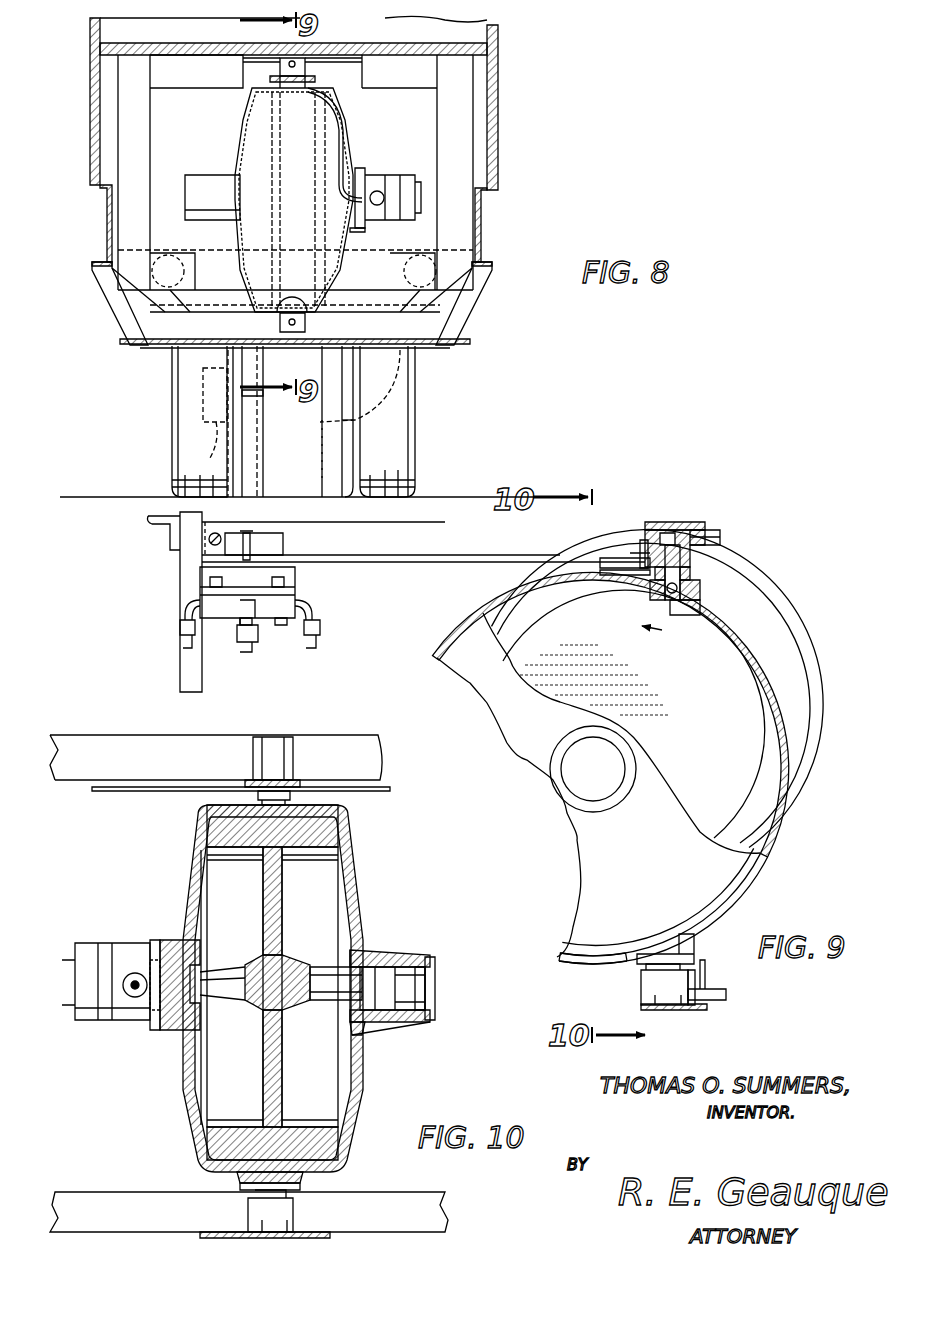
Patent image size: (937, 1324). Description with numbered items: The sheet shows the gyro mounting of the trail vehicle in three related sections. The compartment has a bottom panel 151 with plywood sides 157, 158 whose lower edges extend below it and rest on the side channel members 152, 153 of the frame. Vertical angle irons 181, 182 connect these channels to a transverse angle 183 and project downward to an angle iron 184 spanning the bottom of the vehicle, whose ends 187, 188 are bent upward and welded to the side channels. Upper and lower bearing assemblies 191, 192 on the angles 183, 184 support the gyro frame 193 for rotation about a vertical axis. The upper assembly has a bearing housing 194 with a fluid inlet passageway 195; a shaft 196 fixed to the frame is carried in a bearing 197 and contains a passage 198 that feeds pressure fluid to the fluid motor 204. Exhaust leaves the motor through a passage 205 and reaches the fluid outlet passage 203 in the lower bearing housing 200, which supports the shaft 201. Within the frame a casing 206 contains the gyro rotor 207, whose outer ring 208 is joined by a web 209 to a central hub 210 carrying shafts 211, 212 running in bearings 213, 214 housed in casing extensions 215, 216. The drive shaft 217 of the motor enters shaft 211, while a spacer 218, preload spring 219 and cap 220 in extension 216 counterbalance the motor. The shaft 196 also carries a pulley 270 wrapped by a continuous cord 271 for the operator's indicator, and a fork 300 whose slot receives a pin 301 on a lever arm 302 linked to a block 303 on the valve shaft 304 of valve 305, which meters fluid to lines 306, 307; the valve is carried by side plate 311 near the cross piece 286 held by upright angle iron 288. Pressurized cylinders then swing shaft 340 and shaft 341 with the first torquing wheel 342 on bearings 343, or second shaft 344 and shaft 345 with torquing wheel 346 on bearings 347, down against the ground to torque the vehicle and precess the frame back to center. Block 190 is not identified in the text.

In FIG. 8, the bottom panel 151 is at (412, 48).
In FIG. 8, the side channel member 152 is at (107, 230).
In FIG. 8, the side channel member 153 is at (480, 243).
In FIG. 8, the side 157 is at (100, 95).
In FIG. 8, the side 158 is at (492, 96).
In FIG. 8, the vertical angle iron 181 is at (140, 130).
In FIG. 8, the vertical angle iron 182 is at (458, 160).
In FIG. 9, the angle 183 is at (705, 524).
In FIG. 10, the angle 183 is at (358, 757).
In FIG. 8, the angle iron 184 is at (405, 332).
In FIG. 9, the angle iron 184 is at (700, 1012).
In FIG. 10, the angle iron 184 is at (398, 1200).
In FIG. 8, the end of angle iron 187 is at (100, 263).
In FIG. 8, the end of angle iron 188 is at (480, 270).
In FIG. 8, the support block 190 is at (398, 85).
In FIG. 9, the bearing assembly 191 is at (646, 524).
In FIG. 10, the bearing assembly 191 is at (275, 745).
In FIG. 9, the bearing assembly 192 is at (640, 988).
In FIG. 10, the bearing assembly 192 is at (296, 1210).
In FIG. 8, the gyro frame 193 is at (245, 135).
In FIG. 9, the gyro frame 193 is at (782, 698).
In FIG. 10, the gyro frame 193 is at (366, 905).
In FIG. 9, the bearing housing 194 is at (664, 522).
In FIG. 8, the fluid inlet passageway 195 is at (300, 45).
In FIG. 9, the fluid inlet passageway 195 is at (720, 535).
In FIG. 9, the shaft 196 is at (702, 596).
In FIG. 9, the bearing 197 is at (692, 570).
In FIG. 8, the passage 198 is at (346, 142).
In FIG. 9, the passage 198 is at (655, 604).
In FIG. 10, the passage 198 is at (186, 828).
In FIG. 9, the bearing housing 200 is at (676, 1010).
In FIG. 9, the shaft 201 is at (697, 960).
In FIG. 8, the fluid outlet passage 203 is at (292, 335).
In FIG. 9, the fluid outlet passage 203 is at (708, 992).
In FIG. 8, the fluid motor 204 is at (400, 182).
In FIG. 10, the fluid motor 204 is at (102, 1015).
In FIG. 8, the passage 205 is at (350, 232).
In FIG. 10, the passage 205 is at (135, 973).
In FIG. 10, the casing 206 is at (188, 905).
In FIG. 10, the gyro rotor 207 is at (223, 893).
In FIG. 10, the outer ring 208 is at (296, 840).
In FIG. 10, the web 209 is at (282, 922).
In FIG. 10, the central hub 210 is at (292, 972).
In FIG. 10, the shaft 211 is at (222, 983).
In FIG. 10, the shaft 212 is at (340, 988).
In FIG. 10, the bearing 213 is at (182, 1032).
In FIG. 10, the bearing 214 is at (388, 1025).
In FIG. 10, the casing extension 215 is at (166, 946).
In FIG. 8, the casing extension 216 is at (208, 178).
In FIG. 10, the casing extension 216 is at (402, 953).
In FIG. 10, the drive shaft 217 is at (150, 1012).
In FIG. 10, the spacer 218 is at (410, 1024).
In FIG. 10, the preload spring 219 is at (428, 995).
In FIG. 10, the cap 220 is at (436, 980).
In FIG. 8, the pulley 270 is at (272, 66).
In FIG. 9, the pulley 270 is at (600, 571).
In FIG. 8, the continuous cord 271 is at (318, 76).
In FIG. 9, the continuous cord 271 is at (700, 584).
In FIG. 9, the cross piece 286 is at (162, 522).
In FIG. 9, the upright angle iron 288 is at (185, 570).
In FIG. 9, the fork 300 is at (630, 560).
In FIG. 10, the fork 300 is at (297, 785).
In FIG. 9, the pin 301 is at (640, 548).
In FIG. 9, the lever arm 302 is at (522, 558).
In FIG. 9, the block 303 is at (283, 546).
In FIG. 9, the valve shaft 304 is at (250, 560).
In FIG. 9, the valve 305 is at (300, 590).
In FIG. 9, the line 306 is at (178, 637).
In FIG. 9, the line 307 is at (318, 638).
In FIG. 9, the side plate 311 is at (283, 528).
In FIG. 8, the shaft 340 is at (255, 405).
In FIG. 8, the shaft 341 is at (250, 415).
In FIG. 8, the first torquing wheel 342 is at (175, 460).
In FIG. 8, the bearings 343 is at (205, 420).
In FIG. 8, the second shaft 344 is at (338, 418).
In FIG. 8, the shaft 345 is at (368, 432).
In FIG. 8, the torquing wheel 346 is at (405, 450).
In FIG. 8, the bearings 347 is at (400, 418).